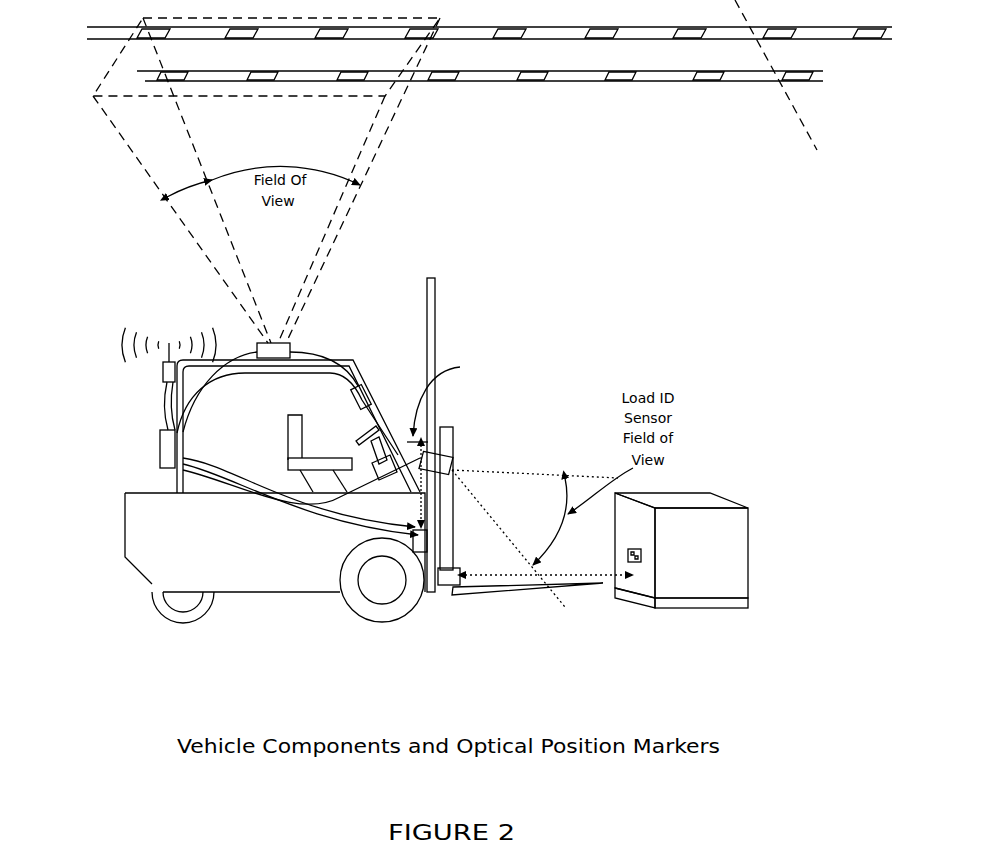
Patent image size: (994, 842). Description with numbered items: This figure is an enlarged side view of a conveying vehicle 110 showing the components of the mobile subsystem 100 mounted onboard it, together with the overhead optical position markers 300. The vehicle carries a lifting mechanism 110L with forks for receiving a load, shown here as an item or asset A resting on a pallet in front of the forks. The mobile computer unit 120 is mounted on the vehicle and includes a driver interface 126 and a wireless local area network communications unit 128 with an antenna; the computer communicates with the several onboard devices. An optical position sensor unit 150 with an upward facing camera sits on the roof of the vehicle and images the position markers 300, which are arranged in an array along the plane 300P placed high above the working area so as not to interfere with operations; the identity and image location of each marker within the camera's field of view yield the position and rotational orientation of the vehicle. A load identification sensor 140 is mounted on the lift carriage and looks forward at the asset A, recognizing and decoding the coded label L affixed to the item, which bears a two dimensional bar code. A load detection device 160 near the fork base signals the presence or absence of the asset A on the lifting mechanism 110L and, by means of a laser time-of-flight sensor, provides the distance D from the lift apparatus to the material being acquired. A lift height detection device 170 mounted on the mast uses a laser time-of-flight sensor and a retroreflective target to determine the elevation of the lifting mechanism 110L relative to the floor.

The mobile subsystem 100 is at (107, 600).
The conveying vehicle 110 is at (276, 487).
The lifting mechanism 110L is at (580, 592).
The mobile computer unit 120 is at (179, 455).
The driver interface 126 is at (372, 386).
The wireless local area network communications unit 128 is at (158, 372).
The load identification sensor 140 is at (458, 466).
The optical position sensor unit 150 is at (250, 342).
The load detection device 160 is at (447, 591).
The lift height detection device 170 is at (408, 540).
The position markers 300 is at (710, 85).
The plane of the position markers 300P is at (789, 92).
The item (asset) A is at (725, 497).
The distance D is at (495, 573).
The coded label L is at (647, 546).